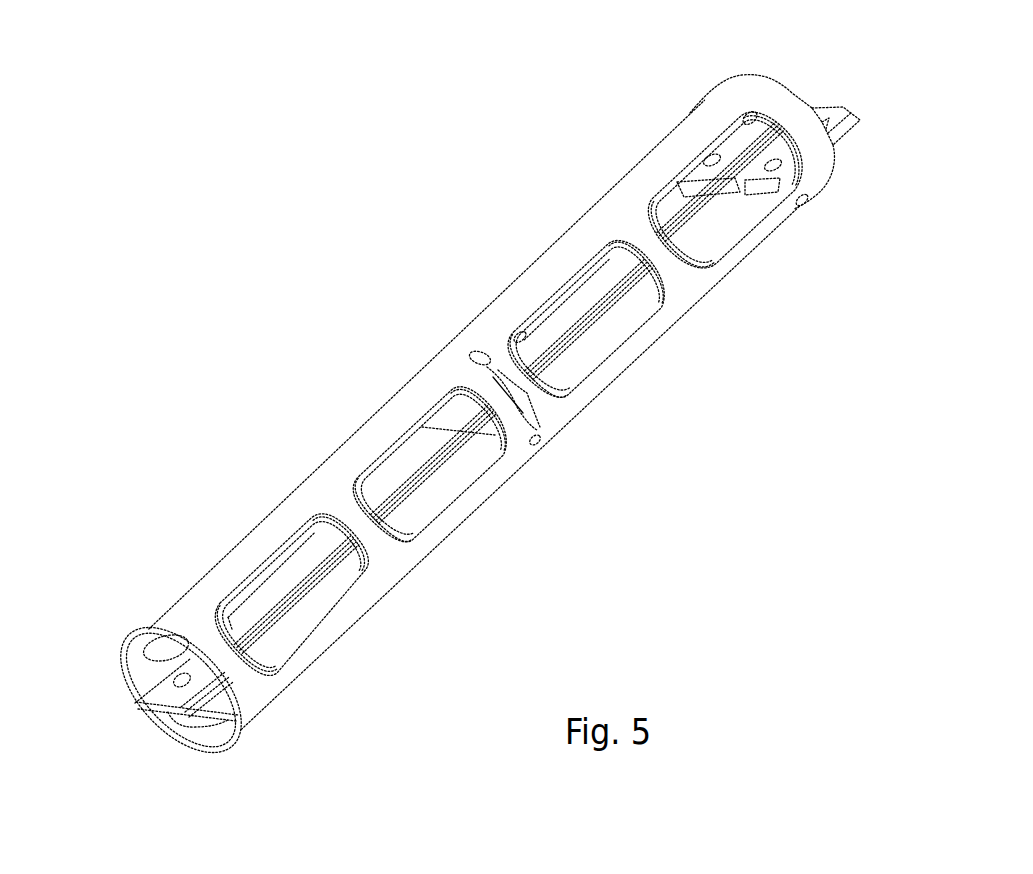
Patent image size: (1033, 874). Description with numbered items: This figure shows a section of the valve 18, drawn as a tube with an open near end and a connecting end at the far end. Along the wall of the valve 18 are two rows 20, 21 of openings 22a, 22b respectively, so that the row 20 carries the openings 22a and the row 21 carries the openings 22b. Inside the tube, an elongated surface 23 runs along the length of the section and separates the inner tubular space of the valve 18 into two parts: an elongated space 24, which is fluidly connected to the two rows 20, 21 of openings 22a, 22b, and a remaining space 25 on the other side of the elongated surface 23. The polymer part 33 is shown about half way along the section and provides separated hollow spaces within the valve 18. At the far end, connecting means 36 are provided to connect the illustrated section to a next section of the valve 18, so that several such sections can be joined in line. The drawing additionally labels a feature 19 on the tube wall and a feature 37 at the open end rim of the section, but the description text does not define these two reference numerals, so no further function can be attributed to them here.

The valve 18 is at (329, 485).
The upper wall of tubular body 19 is at (357, 440).
The row of openings 20 is at (150, 653).
The row of openings 21 is at (283, 670).
The openings 22a is at (240, 587).
The openings 22b is at (330, 625).
The elongated surface 23 is at (213, 697).
The elongated space 24 is at (143, 676).
The remaining space 25 is at (178, 733).
The polymer part 33 is at (513, 388).
The connecting means 36 is at (850, 108).
The end rim 37 is at (210, 752).